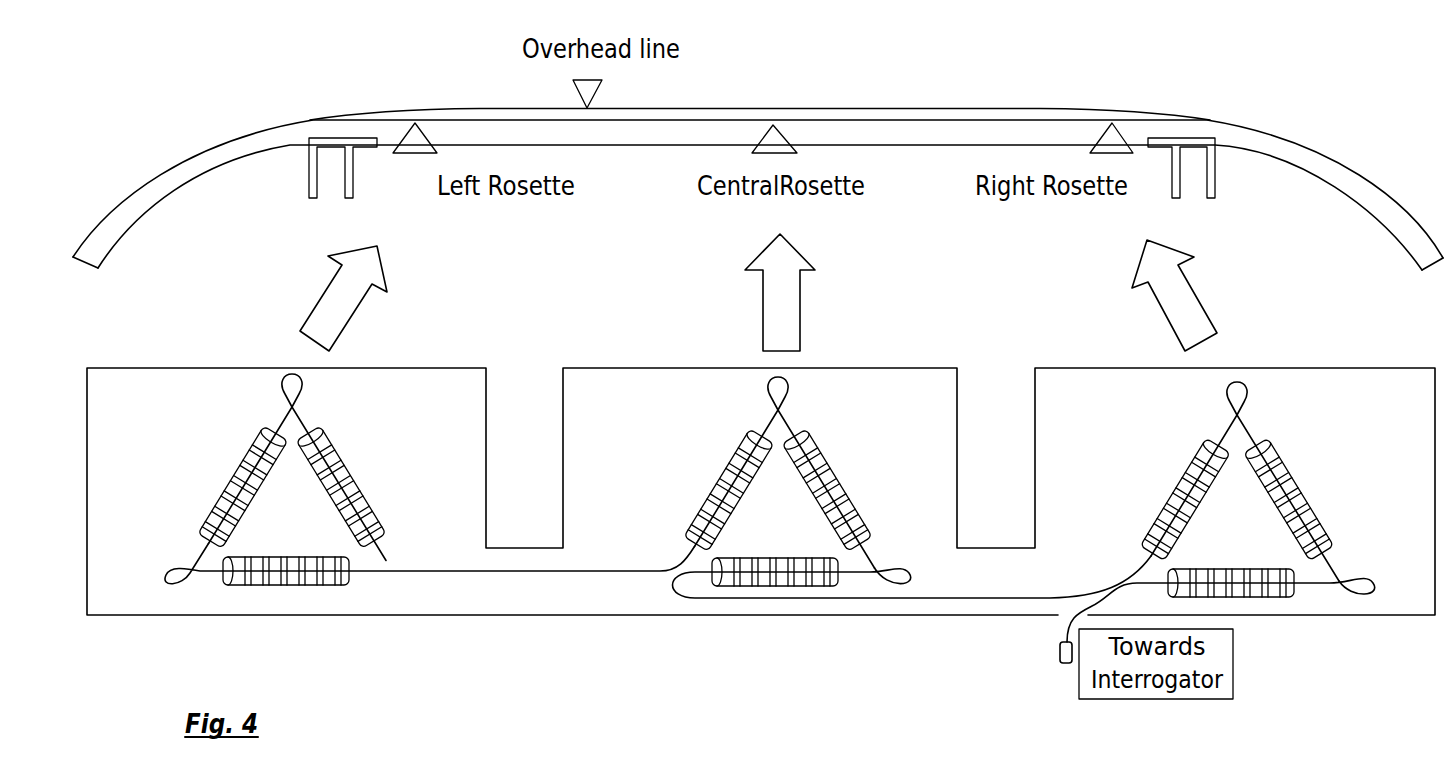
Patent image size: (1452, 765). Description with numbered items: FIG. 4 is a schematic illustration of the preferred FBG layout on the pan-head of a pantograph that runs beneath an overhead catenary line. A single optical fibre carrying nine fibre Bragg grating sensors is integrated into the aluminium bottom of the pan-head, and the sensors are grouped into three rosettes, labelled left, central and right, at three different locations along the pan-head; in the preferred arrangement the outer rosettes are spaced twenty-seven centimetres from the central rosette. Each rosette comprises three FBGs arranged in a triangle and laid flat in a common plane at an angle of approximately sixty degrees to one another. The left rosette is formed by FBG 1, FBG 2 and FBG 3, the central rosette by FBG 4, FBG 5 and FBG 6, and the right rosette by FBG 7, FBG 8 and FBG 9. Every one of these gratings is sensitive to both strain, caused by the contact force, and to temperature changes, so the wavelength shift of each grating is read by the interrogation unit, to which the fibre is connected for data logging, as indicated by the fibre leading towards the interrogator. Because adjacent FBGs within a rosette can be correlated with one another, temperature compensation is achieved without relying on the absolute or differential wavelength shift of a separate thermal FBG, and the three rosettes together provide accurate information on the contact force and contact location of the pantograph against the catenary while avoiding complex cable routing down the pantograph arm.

The FBG sensor 1 is at (362, 487).
The FBG sensor 2 is at (220, 487).
The FBG sensor 3 is at (286, 550).
The FBG sensor 4 is at (708, 490).
The FBG sensor 5 is at (849, 490).
The FBG sensor 6 is at (775, 550).
The FBG sensor 7 is at (1166, 499).
The FBG sensor 8 is at (1310, 499).
The FBG sensor 9 is at (1231, 556).